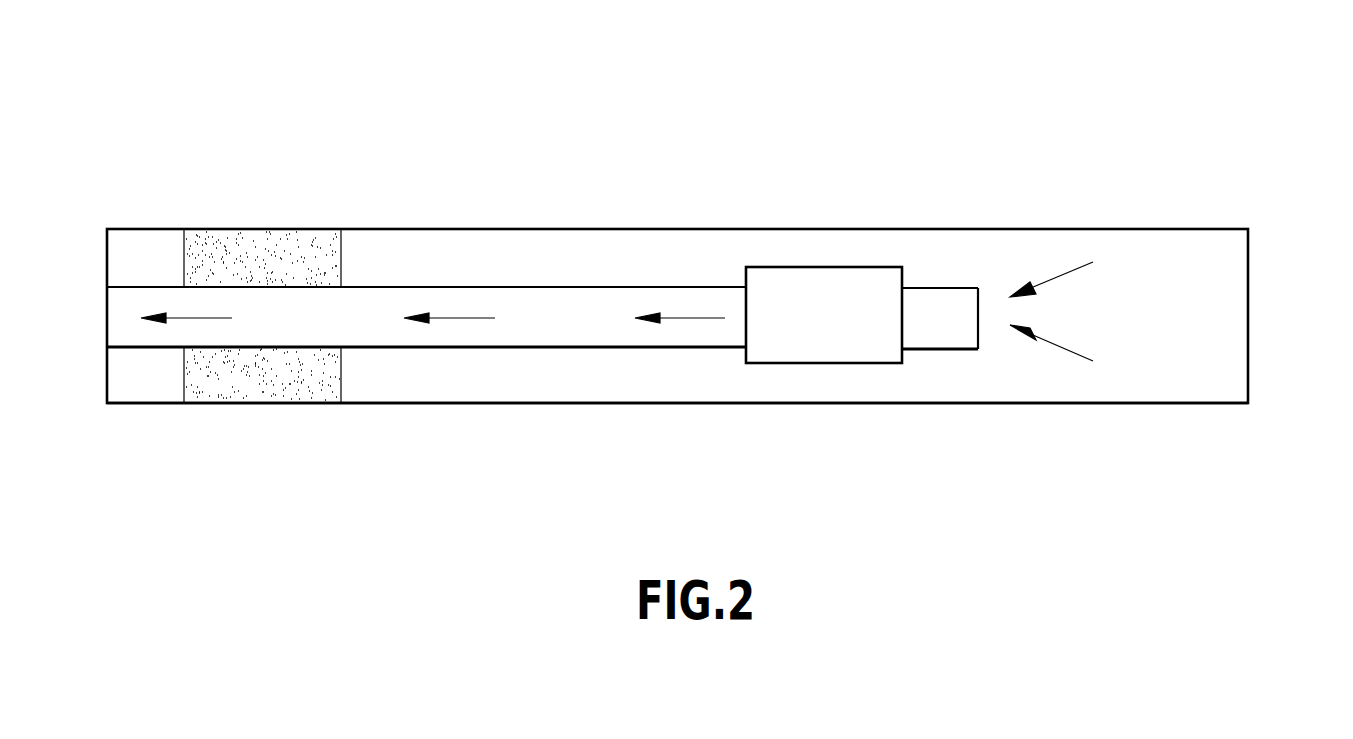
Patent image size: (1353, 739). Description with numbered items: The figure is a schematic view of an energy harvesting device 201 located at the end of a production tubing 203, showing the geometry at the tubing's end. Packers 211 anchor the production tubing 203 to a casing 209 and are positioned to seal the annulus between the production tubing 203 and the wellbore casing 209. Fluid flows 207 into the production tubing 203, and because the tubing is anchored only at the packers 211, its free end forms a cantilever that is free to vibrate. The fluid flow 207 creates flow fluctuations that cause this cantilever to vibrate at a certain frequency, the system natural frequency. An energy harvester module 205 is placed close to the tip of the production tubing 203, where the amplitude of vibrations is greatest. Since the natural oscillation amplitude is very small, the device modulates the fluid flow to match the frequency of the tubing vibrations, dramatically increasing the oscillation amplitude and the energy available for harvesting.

The sensor assembly 201 is at (728, 247).
The production tubing 203 is at (630, 288).
The energy harvester module 205 is at (822, 364).
The fluid flow 207 is at (1248, 284).
The casing 209 is at (437, 405).
The packer 211 is at (288, 229).